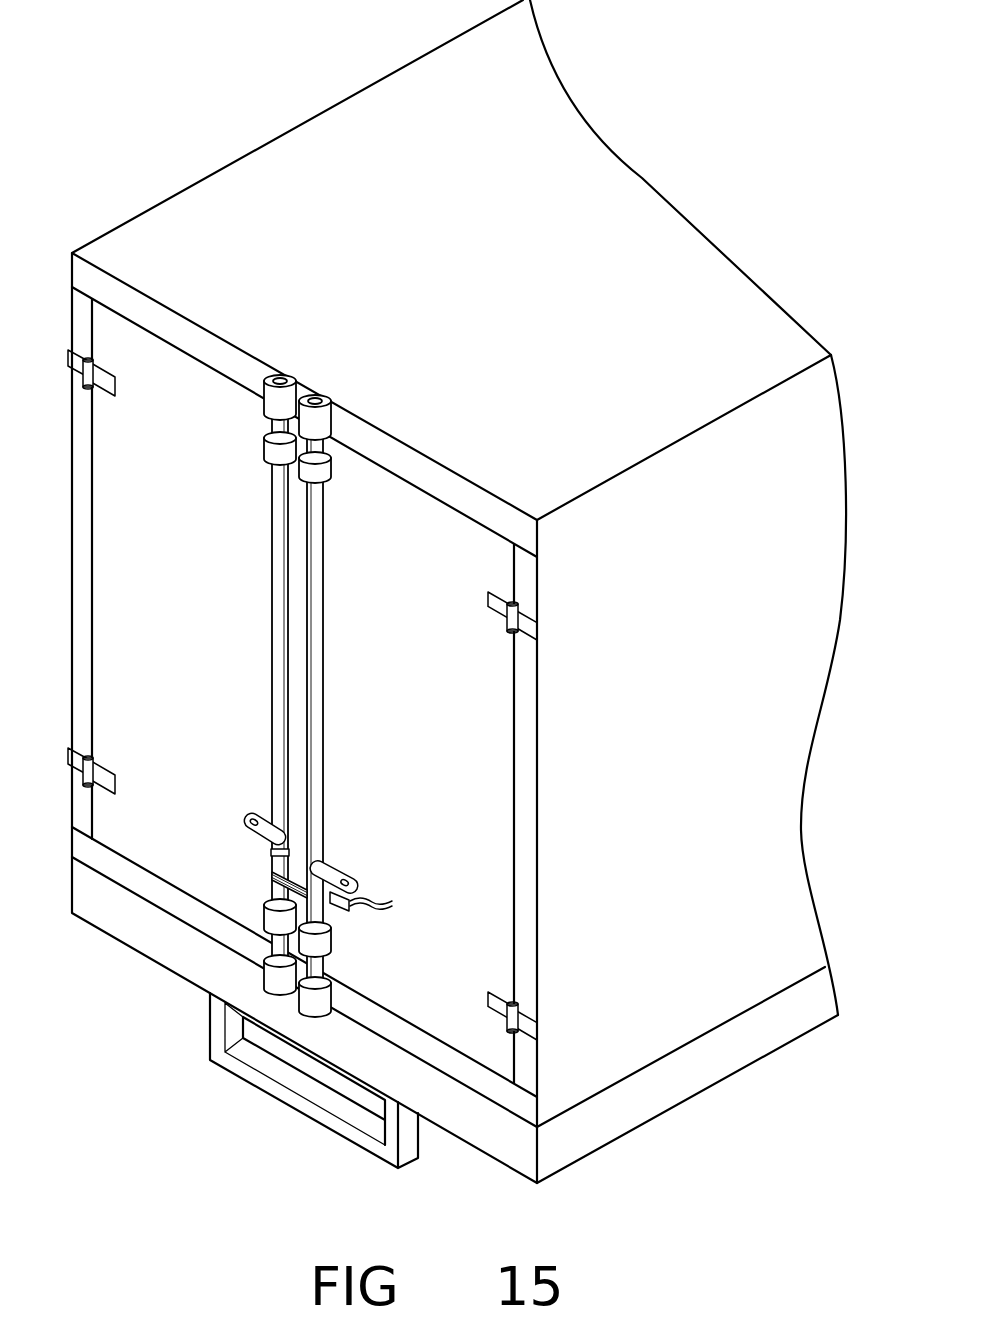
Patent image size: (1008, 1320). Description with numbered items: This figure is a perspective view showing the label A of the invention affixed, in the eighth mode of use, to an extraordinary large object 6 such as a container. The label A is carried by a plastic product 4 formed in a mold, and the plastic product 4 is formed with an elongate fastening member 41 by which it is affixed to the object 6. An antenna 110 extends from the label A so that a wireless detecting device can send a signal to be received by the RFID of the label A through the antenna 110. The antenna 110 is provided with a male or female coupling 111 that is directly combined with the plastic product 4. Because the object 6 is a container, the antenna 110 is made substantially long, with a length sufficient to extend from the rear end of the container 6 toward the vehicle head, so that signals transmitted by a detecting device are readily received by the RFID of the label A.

The extraordinary large object 6 is at (622, 196).
The plastic product 4 is at (300, 895).
The elongate fastening member 41 is at (325, 885).
The antenna 110 is at (382, 902).
The male or female coupling 111 is at (345, 908).
The label A is at (297, 910).